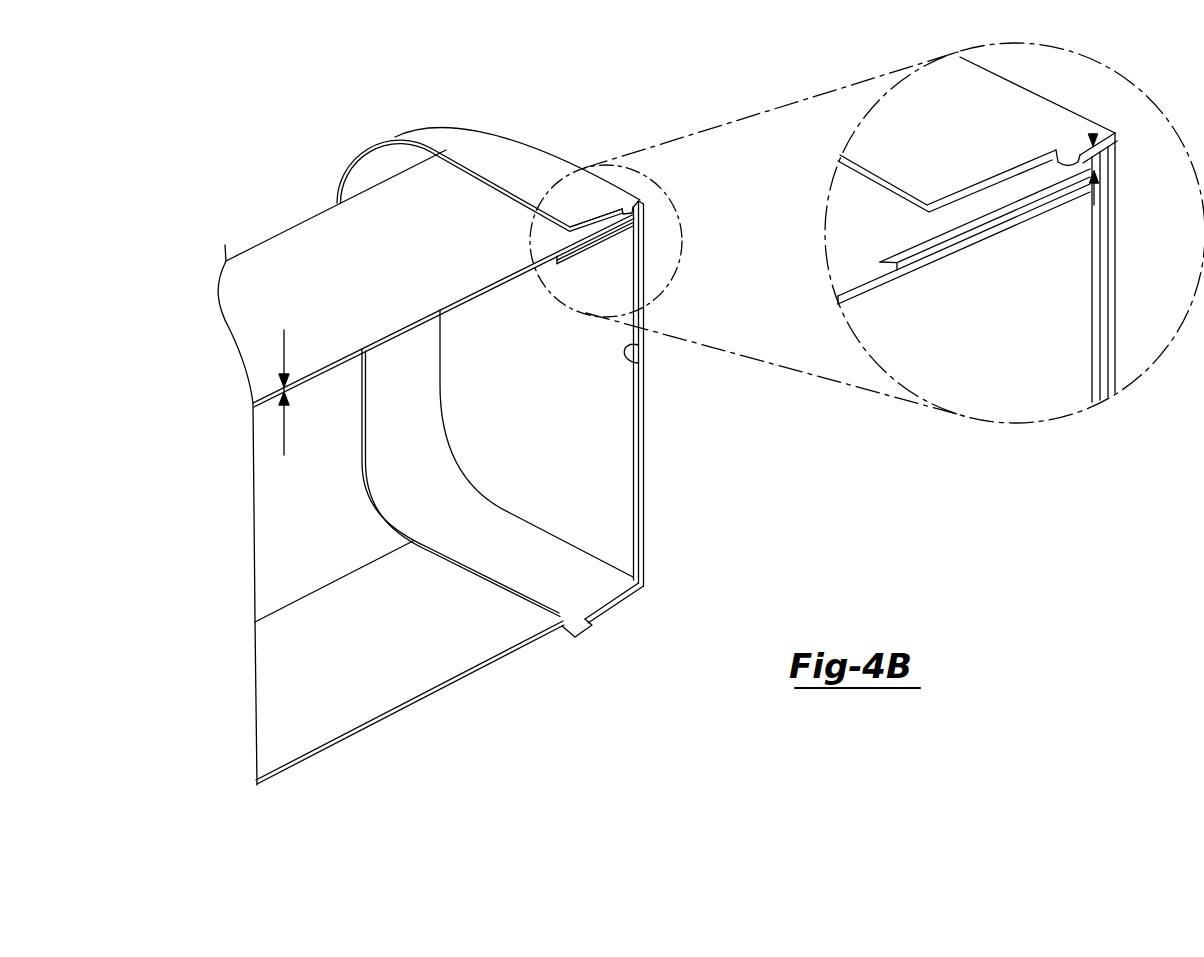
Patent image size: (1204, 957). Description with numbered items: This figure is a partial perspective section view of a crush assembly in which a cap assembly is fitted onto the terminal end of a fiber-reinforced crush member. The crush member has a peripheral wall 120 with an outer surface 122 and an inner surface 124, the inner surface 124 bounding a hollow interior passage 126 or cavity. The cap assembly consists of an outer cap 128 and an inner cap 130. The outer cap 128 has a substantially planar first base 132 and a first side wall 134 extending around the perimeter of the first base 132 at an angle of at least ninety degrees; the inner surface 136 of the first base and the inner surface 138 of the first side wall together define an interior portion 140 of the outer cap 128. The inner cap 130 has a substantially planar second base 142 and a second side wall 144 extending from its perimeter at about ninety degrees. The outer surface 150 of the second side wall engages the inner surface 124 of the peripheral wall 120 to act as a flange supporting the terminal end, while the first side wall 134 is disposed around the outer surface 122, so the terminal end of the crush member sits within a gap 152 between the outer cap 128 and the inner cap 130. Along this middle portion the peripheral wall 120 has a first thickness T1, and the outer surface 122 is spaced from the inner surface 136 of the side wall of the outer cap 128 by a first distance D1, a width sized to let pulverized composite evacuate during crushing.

The peripheral wall 120 is at (633, 472).
The outer surface 122 is at (297, 238).
The inner surface 124 is at (350, 702).
The hollow interior passage 126 is at (277, 503).
The outer cap 128 is at (510, 148).
The inner cap 130 is at (866, 359).
The first base 132 is at (646, 406).
The first side wall 134 is at (618, 604).
The inner surface of the first base 136 is at (638, 363).
The inner surface of the first side wall 138 is at (575, 630).
The interior portion 140 is at (370, 139).
The second base 142 is at (639, 427).
The second side wall 144 is at (590, 250).
The outer surface of the second side wall 150 is at (560, 253).
The gap 152 is at (420, 149).
The first thickness T1 is at (286, 380).
The first distance D1 is at (1093, 134).